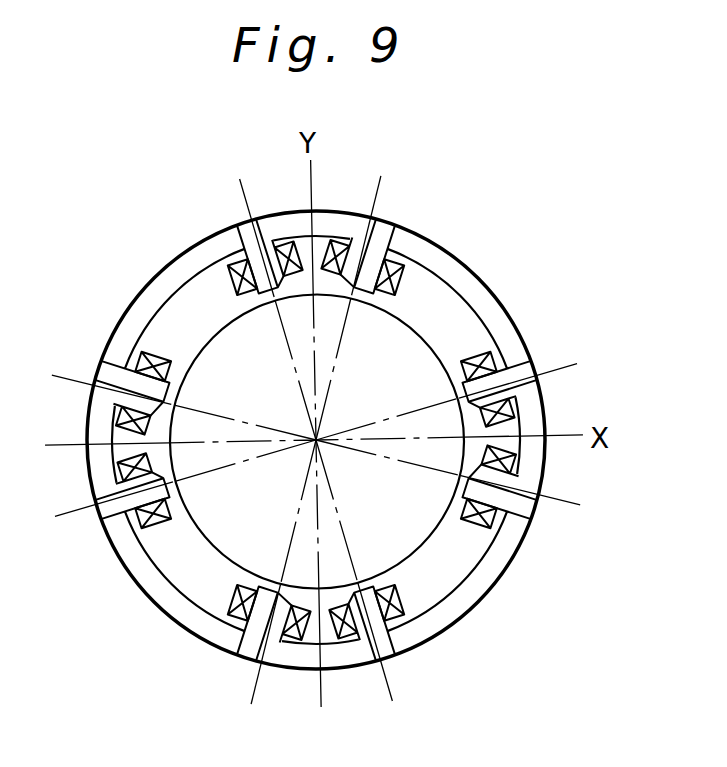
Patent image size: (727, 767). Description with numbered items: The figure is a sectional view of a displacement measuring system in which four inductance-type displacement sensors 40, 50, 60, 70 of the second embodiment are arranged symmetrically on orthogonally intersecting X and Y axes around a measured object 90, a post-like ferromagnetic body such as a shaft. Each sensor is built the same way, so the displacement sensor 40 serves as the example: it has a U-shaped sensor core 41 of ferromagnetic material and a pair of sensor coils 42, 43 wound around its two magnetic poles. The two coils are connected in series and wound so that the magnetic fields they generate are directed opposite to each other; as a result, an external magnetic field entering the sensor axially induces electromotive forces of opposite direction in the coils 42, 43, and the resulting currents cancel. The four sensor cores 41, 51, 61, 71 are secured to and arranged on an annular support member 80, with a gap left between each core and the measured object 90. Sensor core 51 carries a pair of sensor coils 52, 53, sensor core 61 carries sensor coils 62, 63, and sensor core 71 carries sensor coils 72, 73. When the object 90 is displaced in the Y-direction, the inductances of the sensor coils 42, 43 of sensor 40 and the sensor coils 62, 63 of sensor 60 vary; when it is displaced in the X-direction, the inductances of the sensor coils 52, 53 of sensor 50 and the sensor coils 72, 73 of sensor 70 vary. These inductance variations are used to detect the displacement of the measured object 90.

The displacement sensor 40 is at (306, 589).
The sensor core 41 is at (393, 664).
The sensor coil 42 is at (409, 606).
The sensor coil 43 is at (222, 617).
The displacement sensor 50 is at (159, 425).
The sensor core 51 is at (84, 483).
The sensor coil 52 is at (133, 539).
The sensor coil 53 is at (122, 348).
The displacement sensor 60 is at (338, 285).
The sensor core 61 is at (289, 207).
The sensor coil 62 is at (236, 256).
The sensor coil 63 is at (401, 230).
The displacement sensor 70 is at (481, 491).
The sensor core 71 is at (542, 481).
The sensor coil 72 is at (542, 416).
The sensor coil 73 is at (492, 530).
The annular support member 80 is at (504, 303).
The measured object 90 is at (430, 534).